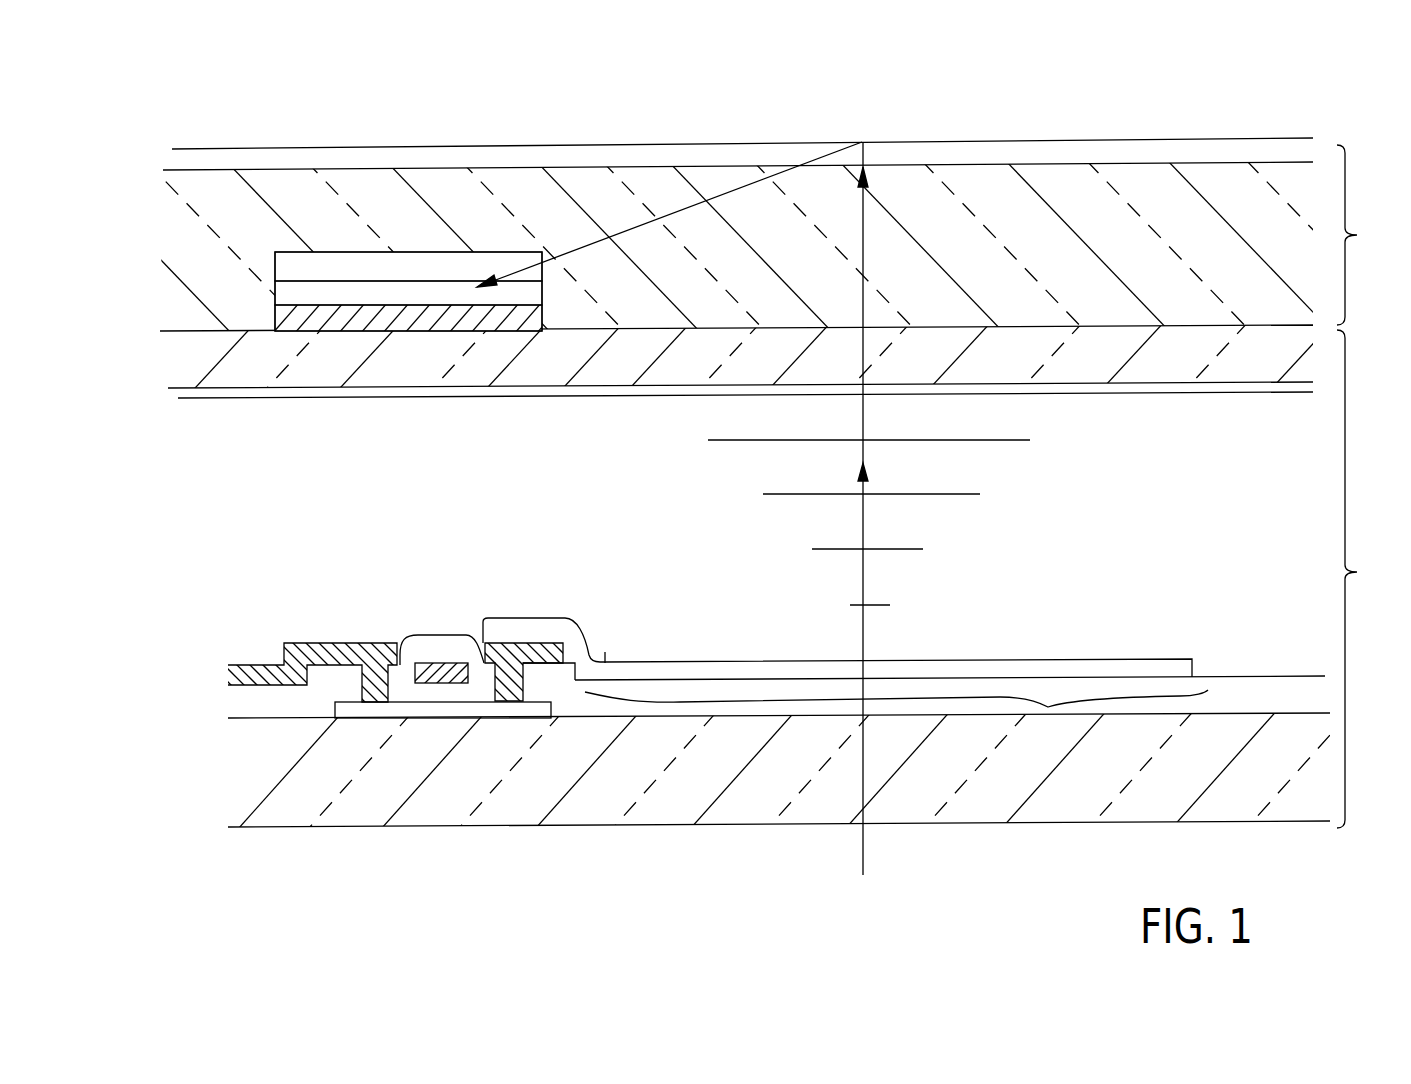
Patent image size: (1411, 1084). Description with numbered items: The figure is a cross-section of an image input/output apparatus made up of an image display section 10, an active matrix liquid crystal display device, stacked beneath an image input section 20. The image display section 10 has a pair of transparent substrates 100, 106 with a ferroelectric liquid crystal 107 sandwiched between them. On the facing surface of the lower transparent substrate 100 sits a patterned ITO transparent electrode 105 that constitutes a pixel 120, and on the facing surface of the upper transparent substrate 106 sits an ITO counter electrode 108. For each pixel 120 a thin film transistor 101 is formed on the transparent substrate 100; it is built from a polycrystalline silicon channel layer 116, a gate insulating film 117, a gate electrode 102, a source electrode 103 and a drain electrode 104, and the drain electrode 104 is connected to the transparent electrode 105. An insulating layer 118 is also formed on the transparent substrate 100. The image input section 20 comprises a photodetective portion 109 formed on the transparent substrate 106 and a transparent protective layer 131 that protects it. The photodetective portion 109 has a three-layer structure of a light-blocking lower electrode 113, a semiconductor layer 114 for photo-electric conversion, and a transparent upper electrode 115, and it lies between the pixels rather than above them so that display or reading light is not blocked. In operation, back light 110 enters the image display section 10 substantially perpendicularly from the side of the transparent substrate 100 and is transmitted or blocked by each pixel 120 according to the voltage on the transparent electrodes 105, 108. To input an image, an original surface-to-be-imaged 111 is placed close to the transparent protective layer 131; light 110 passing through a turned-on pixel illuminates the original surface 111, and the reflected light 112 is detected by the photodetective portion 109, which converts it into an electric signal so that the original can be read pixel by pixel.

The image display section 10 is at (1368, 579).
The image input section 20 is at (1368, 235).
The transparent substrate 100 is at (722, 805).
The thin film transistor 101 is at (404, 699).
The gate electrode 102 is at (433, 665).
The source electrode 103 is at (335, 647).
The drain electrode 104 is at (537, 643).
The transparent electrode 105 is at (685, 672).
The transparent substrate 106 is at (680, 372).
The ferroelectric liquid crystal 107 is at (1075, 562).
The counter electrode 108 is at (1153, 385).
The photodetective portion 109 is at (436, 271).
The light 110 is at (867, 845).
The original surface-to-be-imaged 111 is at (928, 140).
The reflected light 112 is at (675, 217).
The lower electrode 113 is at (545, 313).
The semiconductor layer 114 is at (545, 293).
The transparent upper electrode 115 is at (452, 252).
The channel layer 116 is at (423, 710).
The gate insulating film 117 is at (465, 693).
The insulating layer 118 is at (1228, 698).
The pixel 120 is at (1048, 698).
The transparent protective layer 131 is at (1068, 183).